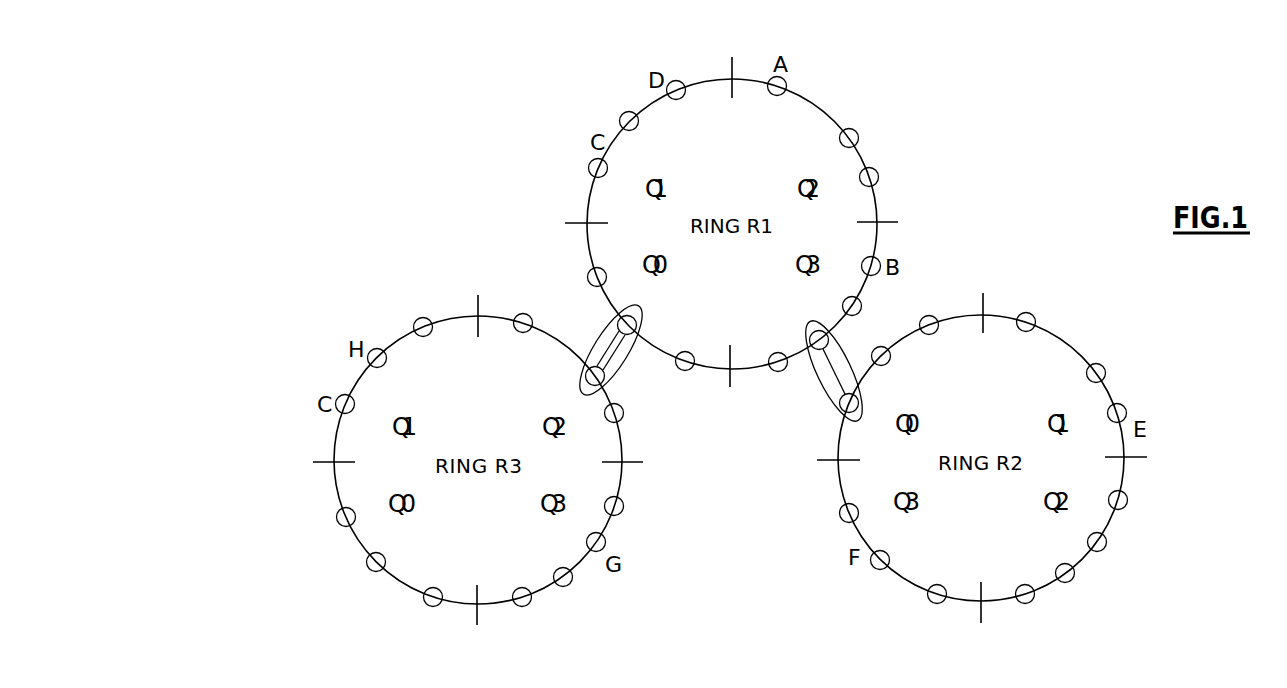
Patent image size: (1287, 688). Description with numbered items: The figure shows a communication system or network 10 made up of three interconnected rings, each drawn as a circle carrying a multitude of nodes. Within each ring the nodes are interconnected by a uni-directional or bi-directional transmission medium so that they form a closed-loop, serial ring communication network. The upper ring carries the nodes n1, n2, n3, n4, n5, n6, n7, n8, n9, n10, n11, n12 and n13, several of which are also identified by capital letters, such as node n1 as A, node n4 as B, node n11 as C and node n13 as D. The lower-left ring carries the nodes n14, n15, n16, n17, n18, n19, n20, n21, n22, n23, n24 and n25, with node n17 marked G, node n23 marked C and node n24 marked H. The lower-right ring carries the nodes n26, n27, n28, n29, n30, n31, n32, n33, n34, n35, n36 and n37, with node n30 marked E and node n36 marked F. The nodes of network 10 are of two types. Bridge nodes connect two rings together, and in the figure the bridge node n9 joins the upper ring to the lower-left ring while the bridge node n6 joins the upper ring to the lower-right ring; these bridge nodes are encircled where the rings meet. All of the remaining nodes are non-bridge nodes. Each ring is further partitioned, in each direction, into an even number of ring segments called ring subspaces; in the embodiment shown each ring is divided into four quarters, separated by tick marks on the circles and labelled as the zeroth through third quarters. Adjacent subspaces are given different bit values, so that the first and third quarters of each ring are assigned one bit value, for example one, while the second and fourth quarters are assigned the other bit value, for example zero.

The communication network 10 is at (442, 88).
The node n1 is at (788, 82).
The node n2 is at (859, 137).
The node n3 is at (878, 180).
The node n4 is at (877, 261).
The node n5 is at (860, 302).
The bridge node n6 is at (822, 396).
The node n7 is at (774, 353).
The node n8 is at (687, 352).
The bridge node n9 is at (596, 333).
The node n10 is at (587, 278).
The node n11 is at (592, 159).
The node n12 is at (618, 111).
The node n13 is at (674, 81).
The node n14 is at (524, 313).
The node n15 is at (624, 413).
The node n16 is at (621, 500).
The node n17 is at (605, 545).
The node n18 is at (569, 586).
The node n19 is at (522, 607).
The node n20 is at (433, 607).
The node n21 is at (366, 563).
The node n22 is at (336, 517).
The node n23 is at (340, 396).
The node n24 is at (385, 363).
The node n25 is at (423, 317).
The node n26 is at (888, 361).
The node n27 is at (932, 334).
The node n28 is at (1036, 319).
The node n29 is at (1106, 373).
The node n30 is at (1127, 410).
The node n31 is at (1126, 494).
The node n32 is at (1105, 548).
The node n33 is at (1071, 584).
The node n34 is at (1026, 604).
The node n35 is at (934, 604).
The node n36 is at (875, 569).
The node n37 is at (839, 513).